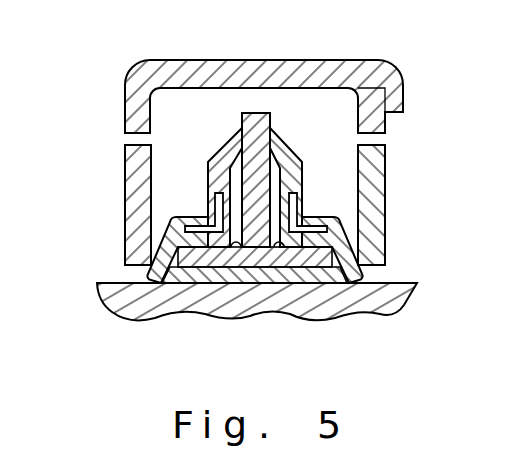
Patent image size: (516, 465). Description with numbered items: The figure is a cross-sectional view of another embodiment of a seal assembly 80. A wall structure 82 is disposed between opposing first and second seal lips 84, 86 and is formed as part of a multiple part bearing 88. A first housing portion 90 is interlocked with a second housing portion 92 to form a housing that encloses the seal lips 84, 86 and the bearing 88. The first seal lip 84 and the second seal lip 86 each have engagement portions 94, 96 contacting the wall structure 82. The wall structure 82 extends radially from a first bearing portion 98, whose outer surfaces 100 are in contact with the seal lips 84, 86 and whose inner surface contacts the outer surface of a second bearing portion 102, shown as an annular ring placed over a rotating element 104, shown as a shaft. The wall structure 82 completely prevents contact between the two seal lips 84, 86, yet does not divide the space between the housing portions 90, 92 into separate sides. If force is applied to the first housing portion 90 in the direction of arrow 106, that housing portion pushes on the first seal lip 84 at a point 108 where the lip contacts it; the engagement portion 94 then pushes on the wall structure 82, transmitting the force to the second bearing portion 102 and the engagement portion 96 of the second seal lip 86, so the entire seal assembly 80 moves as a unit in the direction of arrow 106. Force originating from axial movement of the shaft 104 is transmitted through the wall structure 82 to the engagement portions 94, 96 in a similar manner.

The seal assembly 80 is at (100, 138).
The wall structure 82 is at (253, 113).
The first seal lip 84 is at (217, 203).
The second seal lip 86 is at (300, 210).
The multiple part bearing 88 is at (310, 296).
The first housing portion 90 is at (167, 67).
The second housing portion 92 is at (380, 210).
The engagement portion 94 is at (228, 148).
The engagement portion 96 is at (290, 153).
The first bearing portion 98 is at (320, 268).
The outer surfaces 100 is at (279, 246).
The second bearing portion 102 is at (232, 277).
The rotating element 104 is at (147, 302).
The arrow 106 is at (115, 49).
The point 108 is at (165, 255).